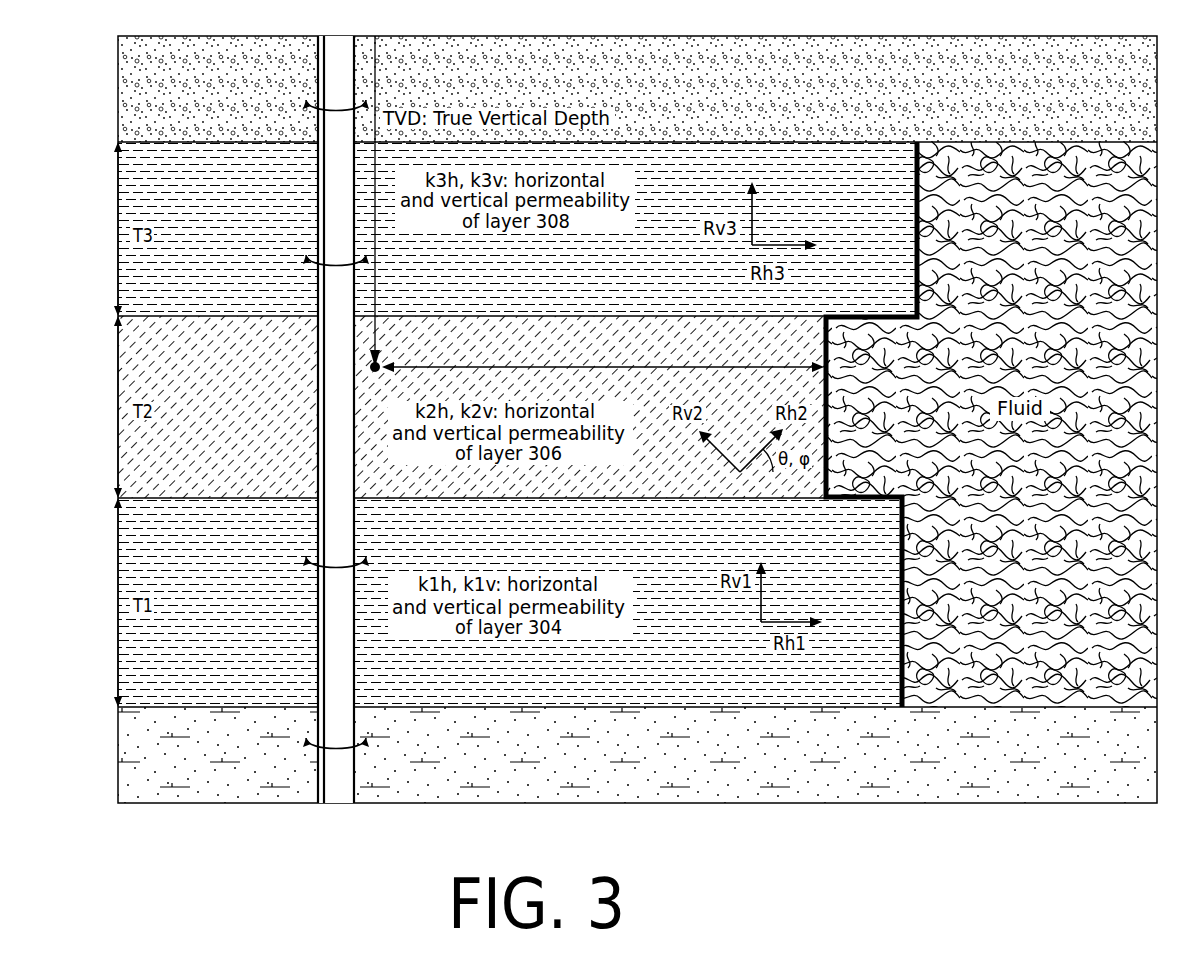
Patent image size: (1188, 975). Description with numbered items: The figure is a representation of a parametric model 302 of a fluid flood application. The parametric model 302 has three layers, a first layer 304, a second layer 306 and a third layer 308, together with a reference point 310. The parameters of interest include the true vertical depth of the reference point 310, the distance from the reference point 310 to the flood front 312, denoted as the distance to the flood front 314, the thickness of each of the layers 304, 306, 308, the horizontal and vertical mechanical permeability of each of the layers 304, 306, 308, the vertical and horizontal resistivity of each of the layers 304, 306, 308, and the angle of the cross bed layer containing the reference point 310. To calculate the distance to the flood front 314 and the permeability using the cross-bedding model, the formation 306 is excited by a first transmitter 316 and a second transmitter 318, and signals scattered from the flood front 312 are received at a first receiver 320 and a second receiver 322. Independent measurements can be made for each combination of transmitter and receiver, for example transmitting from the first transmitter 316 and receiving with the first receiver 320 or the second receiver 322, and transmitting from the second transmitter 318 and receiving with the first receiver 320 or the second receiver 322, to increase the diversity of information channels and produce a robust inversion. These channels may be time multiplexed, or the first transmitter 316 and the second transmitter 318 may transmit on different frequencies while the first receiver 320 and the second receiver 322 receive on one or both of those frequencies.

The parametric model 302 is at (89, 33).
The first layer 304 is at (178, 531).
The second layer 306 is at (178, 350).
The third layer 308 is at (178, 171).
The reference point 310 is at (378, 355).
The flood front 312 is at (829, 388).
The distance to the flood front (DTFF) 314 is at (603, 356).
The transmitter Tx1 316 is at (311, 736).
The transmitter Tx2 318 is at (308, 560).
The receiver Rx1 320 is at (308, 257).
The receiver Rx2 322 is at (308, 102).